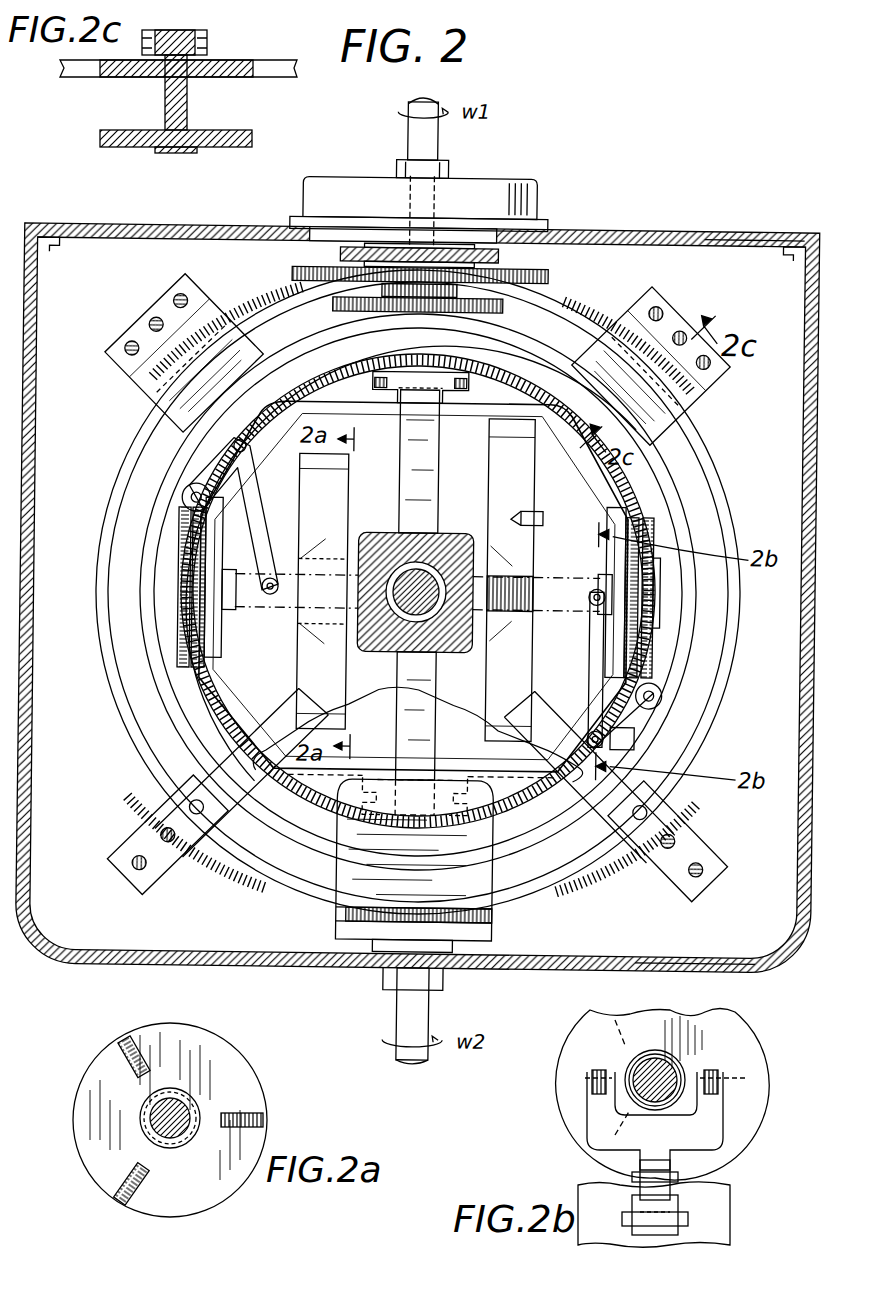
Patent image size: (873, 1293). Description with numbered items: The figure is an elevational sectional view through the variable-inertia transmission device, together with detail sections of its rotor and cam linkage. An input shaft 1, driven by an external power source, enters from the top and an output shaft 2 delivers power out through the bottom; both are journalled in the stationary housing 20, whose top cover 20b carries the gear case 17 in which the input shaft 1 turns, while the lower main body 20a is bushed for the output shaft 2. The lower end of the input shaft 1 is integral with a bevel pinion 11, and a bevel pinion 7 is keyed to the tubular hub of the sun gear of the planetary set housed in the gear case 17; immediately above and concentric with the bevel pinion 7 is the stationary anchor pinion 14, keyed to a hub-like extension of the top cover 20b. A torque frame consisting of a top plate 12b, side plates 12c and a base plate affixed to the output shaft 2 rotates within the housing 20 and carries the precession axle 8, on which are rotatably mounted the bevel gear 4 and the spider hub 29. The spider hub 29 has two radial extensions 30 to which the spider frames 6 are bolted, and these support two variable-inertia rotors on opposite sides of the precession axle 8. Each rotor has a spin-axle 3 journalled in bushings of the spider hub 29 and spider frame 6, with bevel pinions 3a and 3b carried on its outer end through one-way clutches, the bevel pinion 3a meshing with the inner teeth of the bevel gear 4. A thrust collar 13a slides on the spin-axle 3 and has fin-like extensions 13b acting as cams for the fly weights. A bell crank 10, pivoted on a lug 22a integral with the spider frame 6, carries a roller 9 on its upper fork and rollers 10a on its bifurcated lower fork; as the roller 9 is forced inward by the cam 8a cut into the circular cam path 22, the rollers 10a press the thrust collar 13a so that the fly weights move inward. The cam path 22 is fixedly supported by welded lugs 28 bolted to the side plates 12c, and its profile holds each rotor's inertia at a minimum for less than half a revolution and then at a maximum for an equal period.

In FIG. 2, the input shaft 1 is at (400, 132).
In FIG. 2, the output shaft 2 is at (436, 1012).
In FIG. 2, the spin-axle 3 is at (252, 600).
In FIG. 2A, the spin-axle 3 is at (170, 1140).
In FIG. 2B, the spin-axle 3 is at (630, 1062).
In FIG. 2, the bevel pinion 3a is at (180, 602).
In FIG. 2, the bevel pinion 3b is at (186, 622).
In FIG. 2, the bevel gear 4 is at (96, 665).
In FIG. 2, the spider frame 6 is at (330, 410).
In FIG. 2B, the spider frame 6 is at (730, 1232).
In FIG. 2, the bevel pinion 7 is at (378, 286).
In FIG. 2, the precession axle 8 is at (420, 588).
In FIG. 2, the cam 8a is at (312, 360).
In FIG. 2C, the cam 8a is at (165, 153).
In FIG. 2, the roller 9 is at (182, 502).
In FIG. 2B, the roller 9 is at (672, 1158).
In FIG. 2, the bell crank 10 is at (246, 478).
In FIG. 2B, the bell crank 10 is at (712, 1110).
In FIG. 2, the rollers 10a is at (270, 640).
In FIG. 2B, the rollers 10a is at (598, 1072).
In FIG. 2, the bevel pinion 11 is at (500, 306).
In FIG. 2, the top plate 12b is at (500, 256).
In FIG. 2, the side plates 12c is at (160, 375).
In FIG. 2C, the side plates 12c is at (268, 64).
In FIG. 2, the thrust collar 13a is at (558, 494).
In FIG. 2A, the thrust collar 13a is at (255, 1066).
In FIG. 2B, the thrust collar 13a is at (563, 1105).
In FIG. 2, the fin-like extensions 13b is at (530, 520).
In FIG. 2A, the fin-like extensions 13b is at (128, 1060).
In FIG. 2B, the fin-like extensions 13b is at (600, 1158).
In FIG. 2, the anchor pinion 14 is at (290, 272).
In FIG. 2, the gear case 17 is at (520, 182).
In FIG. 2, the housing 20 is at (322, 970).
In FIG. 2, the lower main body 20a is at (640, 958).
In FIG. 2, the top cover 20b is at (740, 232).
In FIG. 2, the cam path 22 is at (698, 470).
In FIG. 2C, the cam path 22 is at (215, 132).
In FIG. 2, the lug 22a is at (616, 736).
In FIG. 2B, the lug 22a is at (680, 1212).
In FIG. 2, the welded lugs 28 is at (728, 372).
In FIG. 2C, the welded lugs 28 is at (182, 32).
In FIG. 2, the spider hub 29 is at (372, 542).
In FIG. 2, the radial extensions 30 is at (400, 458).